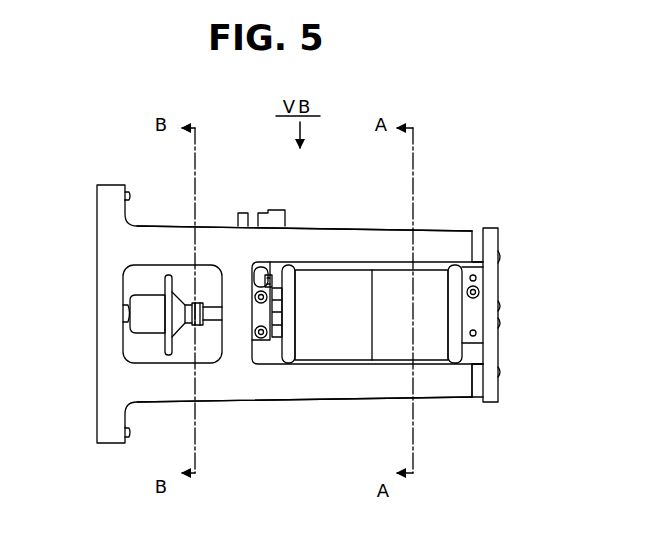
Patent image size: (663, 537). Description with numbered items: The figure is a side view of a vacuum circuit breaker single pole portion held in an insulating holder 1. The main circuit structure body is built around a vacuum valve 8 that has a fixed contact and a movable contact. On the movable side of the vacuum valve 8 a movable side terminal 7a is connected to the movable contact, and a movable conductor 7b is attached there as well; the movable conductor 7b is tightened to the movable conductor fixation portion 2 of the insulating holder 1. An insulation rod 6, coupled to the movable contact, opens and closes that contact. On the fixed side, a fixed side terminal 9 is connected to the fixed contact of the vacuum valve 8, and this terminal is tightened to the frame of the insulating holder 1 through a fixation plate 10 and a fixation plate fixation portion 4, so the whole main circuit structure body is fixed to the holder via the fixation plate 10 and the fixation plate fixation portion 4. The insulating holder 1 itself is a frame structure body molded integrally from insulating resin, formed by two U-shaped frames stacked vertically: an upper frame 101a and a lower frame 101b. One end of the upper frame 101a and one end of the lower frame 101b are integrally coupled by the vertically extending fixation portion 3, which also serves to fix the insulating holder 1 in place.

The insulating holder 1 is at (262, 402).
The movable conductor fixation portion 2 is at (273, 208).
The fixation portion 3 is at (110, 345).
The fixation plate fixation portion 4 is at (474, 398).
The insulation rod 6 is at (160, 288).
The movable side terminal 7a is at (266, 272).
The movable conductor 7b is at (238, 211).
The vacuum valve 8 is at (393, 288).
The fixed side terminal 9 is at (468, 288).
The fixation plate 10 is at (500, 343).
The upper frame 101a is at (340, 244).
The lower frame 101b is at (333, 387).